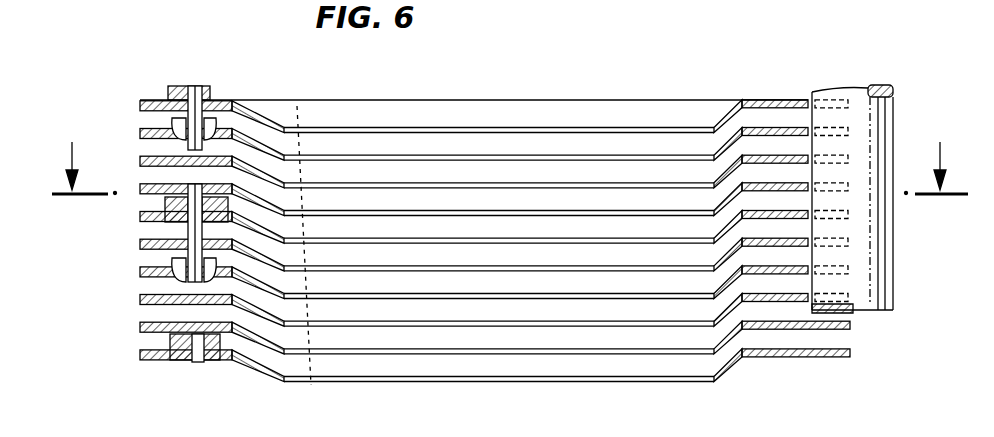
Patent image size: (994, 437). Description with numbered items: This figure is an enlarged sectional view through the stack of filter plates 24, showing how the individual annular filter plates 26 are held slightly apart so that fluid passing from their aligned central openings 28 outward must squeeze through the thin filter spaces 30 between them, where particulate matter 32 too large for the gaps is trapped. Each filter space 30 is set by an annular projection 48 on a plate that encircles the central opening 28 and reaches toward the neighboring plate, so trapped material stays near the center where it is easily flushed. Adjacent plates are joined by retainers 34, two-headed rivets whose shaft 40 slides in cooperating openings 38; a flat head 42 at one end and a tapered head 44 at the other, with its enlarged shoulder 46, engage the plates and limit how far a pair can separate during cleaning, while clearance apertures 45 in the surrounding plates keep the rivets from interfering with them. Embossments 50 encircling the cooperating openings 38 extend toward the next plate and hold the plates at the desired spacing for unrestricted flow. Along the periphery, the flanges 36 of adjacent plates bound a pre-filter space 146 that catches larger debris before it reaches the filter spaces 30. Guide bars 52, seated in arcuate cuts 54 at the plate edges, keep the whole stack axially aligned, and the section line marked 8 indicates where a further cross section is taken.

The section line 8- 8 is at (510, 154).
The stack of filter plates 24 is at (550, 86).
The annular filter plate 26 is at (148, 102).
The central opening 28 is at (600, 128).
The filter space 30 is at (240, 124).
The particulate matter 32 is at (200, 88).
The retainer 34 is at (193, 90).
The flange 36 is at (360, 118).
The cooperating opening 38 is at (205, 118).
The shaft 40 is at (205, 200).
The flat head 42 is at (170, 202).
The tapered head 44 is at (170, 300).
The clearance aperture 45 is at (185, 184).
The enlarged shoulder 46 is at (175, 276).
The annular projection 48 is at (245, 127).
The embossment 50 is at (182, 216).
The guide bar 52 is at (858, 95).
The arcuate cut 54 is at (840, 328).
The pre-filter space 146 is at (440, 140).